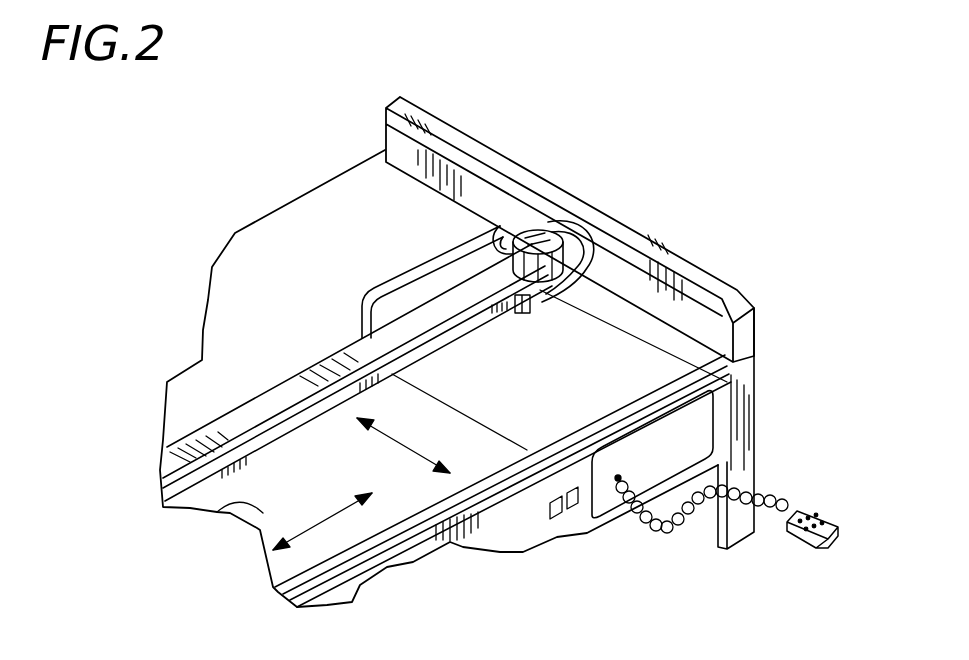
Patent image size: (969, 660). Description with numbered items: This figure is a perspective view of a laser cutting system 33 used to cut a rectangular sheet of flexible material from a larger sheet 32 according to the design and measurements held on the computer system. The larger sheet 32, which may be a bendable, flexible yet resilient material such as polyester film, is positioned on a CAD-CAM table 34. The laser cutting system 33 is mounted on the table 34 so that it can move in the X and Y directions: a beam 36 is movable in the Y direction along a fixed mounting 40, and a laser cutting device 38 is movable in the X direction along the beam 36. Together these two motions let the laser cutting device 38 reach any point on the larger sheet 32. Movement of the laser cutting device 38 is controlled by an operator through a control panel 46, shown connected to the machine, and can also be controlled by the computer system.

The laser cutting system 33 is at (631, 143).
The CAD-CAM table 34 is at (217, 512).
The larger sheet 32 is at (550, 393).
The beam 36 is at (345, 363).
The laser cutting device 38 is at (533, 314).
The fixed mounting 40 is at (683, 270).
The control panel 46 is at (807, 517).